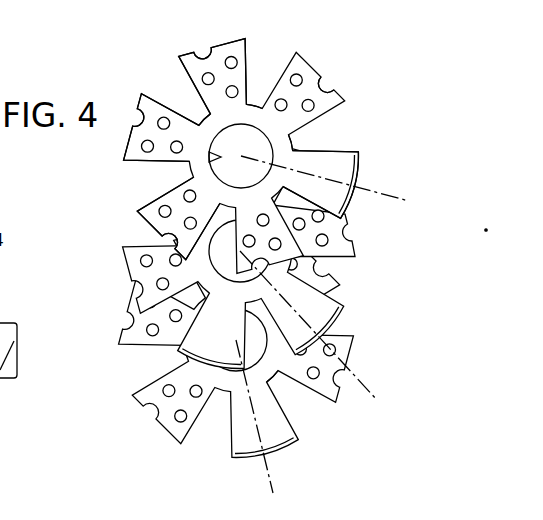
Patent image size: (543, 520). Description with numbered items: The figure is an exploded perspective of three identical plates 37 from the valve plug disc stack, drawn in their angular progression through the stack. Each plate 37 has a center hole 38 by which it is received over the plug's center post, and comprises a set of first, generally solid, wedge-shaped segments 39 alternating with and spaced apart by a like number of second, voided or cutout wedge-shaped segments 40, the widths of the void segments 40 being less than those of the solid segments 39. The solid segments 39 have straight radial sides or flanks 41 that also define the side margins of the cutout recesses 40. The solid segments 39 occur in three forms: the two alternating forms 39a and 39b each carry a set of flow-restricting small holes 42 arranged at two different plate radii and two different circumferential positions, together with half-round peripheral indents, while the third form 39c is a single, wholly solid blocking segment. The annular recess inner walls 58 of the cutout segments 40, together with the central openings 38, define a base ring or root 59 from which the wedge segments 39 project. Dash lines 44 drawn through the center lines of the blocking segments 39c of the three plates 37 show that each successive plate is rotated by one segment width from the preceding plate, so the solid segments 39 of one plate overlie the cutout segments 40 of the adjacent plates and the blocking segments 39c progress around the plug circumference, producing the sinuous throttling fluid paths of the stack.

The plates 37 is at (140, 72).
The center holes 38 is at (213, 171).
The first solid wedge-shaped segments 39 is at (300, 58).
The first form of solid segment 39a is at (225, 55).
The second form of solid segment 39b is at (333, 107).
The blocking segment 39c is at (347, 172).
The cutout second segments 40 is at (342, 143).
The straight radial sides 41 is at (152, 204).
The flow restricting ports 42 is at (128, 149).
The dash lines 44 is at (380, 200).
The annular recess inner walls 58 is at (200, 101).
The base ring 59 is at (260, 117).